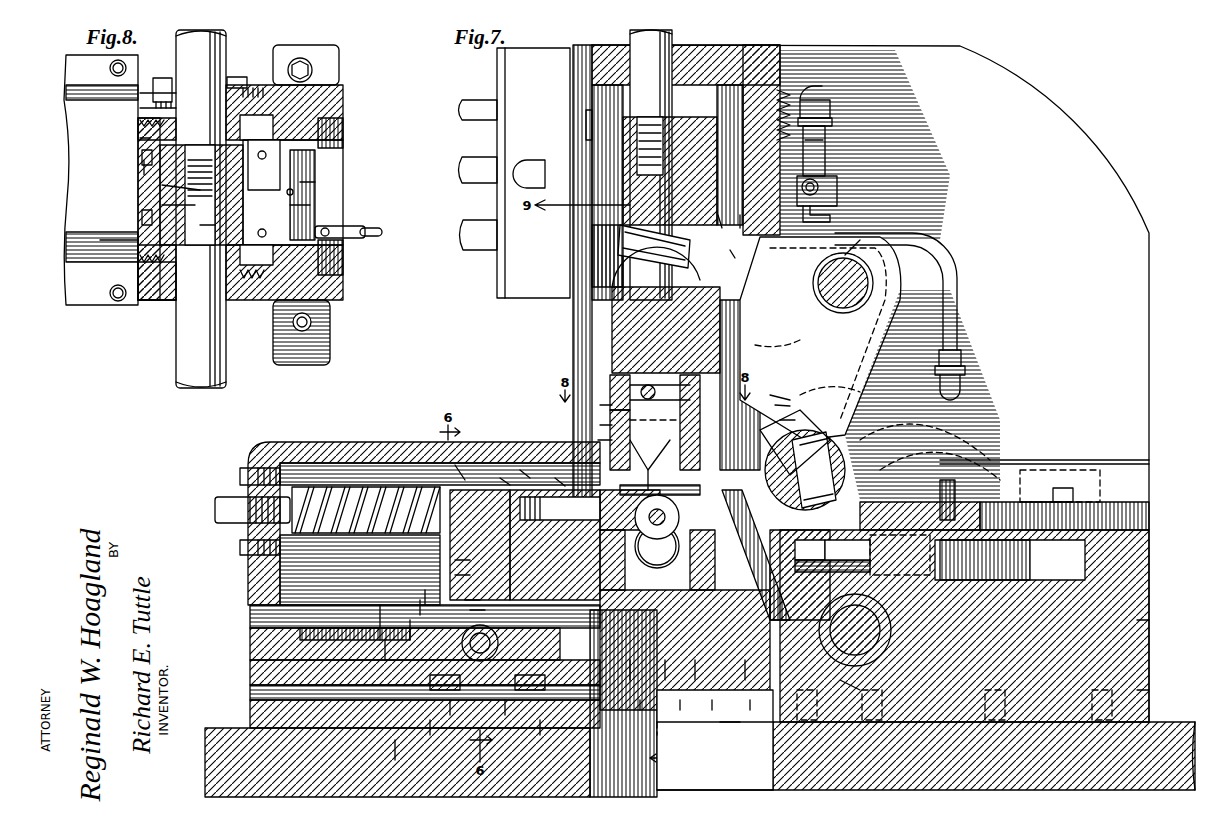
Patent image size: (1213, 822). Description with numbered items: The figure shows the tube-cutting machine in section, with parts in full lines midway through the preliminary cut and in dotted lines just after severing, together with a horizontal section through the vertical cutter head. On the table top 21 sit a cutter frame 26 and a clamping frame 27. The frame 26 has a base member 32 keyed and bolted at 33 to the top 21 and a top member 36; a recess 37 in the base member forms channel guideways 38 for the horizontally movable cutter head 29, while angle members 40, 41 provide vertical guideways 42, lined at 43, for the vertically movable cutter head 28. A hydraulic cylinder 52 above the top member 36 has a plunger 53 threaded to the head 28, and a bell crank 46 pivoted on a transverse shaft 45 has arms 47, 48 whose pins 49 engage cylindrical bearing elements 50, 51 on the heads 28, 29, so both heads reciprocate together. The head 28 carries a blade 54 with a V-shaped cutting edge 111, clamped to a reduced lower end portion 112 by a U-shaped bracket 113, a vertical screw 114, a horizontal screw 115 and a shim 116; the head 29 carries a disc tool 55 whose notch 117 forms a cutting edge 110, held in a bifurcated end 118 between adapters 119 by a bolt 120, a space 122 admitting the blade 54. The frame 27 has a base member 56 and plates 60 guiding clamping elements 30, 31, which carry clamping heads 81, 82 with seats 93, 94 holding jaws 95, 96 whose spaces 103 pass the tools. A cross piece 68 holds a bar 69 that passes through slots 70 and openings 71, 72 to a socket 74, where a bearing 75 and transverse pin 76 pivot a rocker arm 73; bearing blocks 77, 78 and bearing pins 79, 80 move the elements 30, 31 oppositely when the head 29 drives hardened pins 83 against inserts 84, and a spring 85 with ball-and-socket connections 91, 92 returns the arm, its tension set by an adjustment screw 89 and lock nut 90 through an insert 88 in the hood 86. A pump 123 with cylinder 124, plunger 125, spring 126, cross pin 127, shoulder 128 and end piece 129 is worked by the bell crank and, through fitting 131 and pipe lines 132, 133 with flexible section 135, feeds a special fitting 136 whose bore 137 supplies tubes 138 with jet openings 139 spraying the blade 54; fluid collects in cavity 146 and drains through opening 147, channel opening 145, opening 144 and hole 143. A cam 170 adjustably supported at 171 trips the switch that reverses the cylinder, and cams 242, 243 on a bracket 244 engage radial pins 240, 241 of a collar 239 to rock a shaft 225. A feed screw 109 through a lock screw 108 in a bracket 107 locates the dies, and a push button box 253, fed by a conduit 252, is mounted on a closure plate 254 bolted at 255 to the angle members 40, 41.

In FIG. 7, the table top 21 is at (232, 730).
In FIG. 8, the cutter frame 26 is at (338, 300).
In FIG. 7, the cutter frame 26 is at (1154, 560).
In FIG. 8, the clamping frame 27 is at (97, 305).
In FIG. 7, the clamping frame 27 is at (244, 700).
In FIG. 8, the vertically movable tube cutter head 28 is at (240, 134).
In FIG. 7, the vertically movable tube cutter head 28 is at (635, 310).
In FIG. 8, the horizontally movable tube cutter head 29 is at (343, 150).
In FIG. 7, the horizontally movable tube cutter head 29 is at (955, 432).
In FIG. 7, the tube-clamping element 30 is at (380, 605).
In FIG. 7, the tube-clamping element 31 is at (385, 640).
In FIG. 7, the base member 32 is at (1149, 622).
In FIG. 7, the bolting 33 is at (1149, 692).
In FIG. 7, the top member 36 is at (582, 47).
In FIG. 7, the recess 37 is at (1118, 502).
In FIG. 7, the channel guideways 38 is at (1085, 502).
In FIG. 8, the angle member 40 is at (168, 270).
In FIG. 8, the angle member 41 is at (192, 118).
In FIG. 7, the angle member 41 is at (600, 230).
In FIG. 8, the vertical guideways 42 is at (344, 130).
In FIG. 7, the vertical guideways 42 is at (700, 80).
In FIG. 8, the lining 43 is at (262, 90).
In FIG. 7, the transverse shaft 45 is at (890, 225).
In FIG. 7, the bell crank 46 is at (900, 245).
In FIG. 7, the arm of bell crank 47 is at (700, 282).
In FIG. 7, the arm of bell crank 48 is at (830, 381).
In FIG. 7, the pins 49 is at (620, 245).
In FIG. 7, the cylindrical bearing element 50 is at (630, 285).
In FIG. 7, the cylindrical bearing element 51 is at (812, 428).
In FIG. 7, the hydraulic cylinder 52 is at (700, 45).
In FIG. 7, the plunger 53 is at (640, 45).
In FIG. 8, the cutting tool 54 is at (160, 178).
In FIG. 7, the cutting tool 54 is at (610, 410).
In FIG. 7, the cutting tool 55 is at (605, 440).
In FIG. 7, the base member 56 is at (255, 692).
In FIG. 8, the heavy plate 60 is at (145, 302).
In FIG. 7, the heavy plate 60 is at (255, 612).
In FIG. 7, the cross piece 68 is at (255, 670).
In FIG. 7, the bar 69 is at (255, 645).
In FIG. 7, the slots 70 is at (405, 625).
In FIG. 7, the opening 71 is at (395, 760).
In FIG. 7, the opening 72 is at (410, 620).
In FIG. 7, the rocker arm 73 is at (495, 465).
In FIG. 7, the socket 74 is at (470, 610).
In FIG. 7, the bearing 75 is at (465, 600).
In FIG. 7, the transverse pin 76 is at (460, 590).
In FIG. 7, the bearing block 77 is at (430, 735).
In FIG. 7, the bearing block 78 is at (420, 600).
In FIG. 7, the bearing pins 79 is at (450, 715).
In FIG. 7, the bearing pins 80 is at (425, 590).
In FIG. 7, the clamping head 81 is at (745, 680).
In FIG. 7, the clamping head 82 is at (525, 470).
In FIG. 8, the hardened pins 83 is at (142, 152).
In FIG. 7, the hardened pins 83 is at (538, 497).
In FIG. 7, the hardened inserts 84 is at (505, 480).
In FIG. 7, the compression spiral spring 85 is at (364, 487).
In FIG. 8, the hood 86 is at (70, 174).
In FIG. 7, the hood 86 is at (418, 442).
In FIG. 7, the removable insert 88 is at (240, 547).
In FIG. 7, the adjustment screw 89 is at (215, 505).
In FIG. 7, the lock nut 90 is at (240, 478).
In FIG. 7, the ball-and-socket connection 91 is at (460, 470).
In FIG. 7, the ball-and-socket connection 92 is at (292, 442).
In FIG. 7, the right-angled seat 93 is at (718, 712).
In FIG. 7, the right-angled seat 94 is at (630, 680).
In FIG. 7, the jaw 95 is at (695, 680).
In FIG. 7, the jaw 96 is at (665, 680).
In FIG. 7, the spaces 103 is at (685, 712).
In FIG. 8, the bracket 107 is at (150, 108).
In FIG. 8, the lock screw 108 is at (152, 96).
In FIG. 8, the feed screw 109 is at (162, 78).
In FIG. 7, the cutting edge 110 is at (653, 546).
In FIG. 7, the V-shaped cutting edge 111 is at (610, 425).
In FIG. 8, the reduced lower end portion 112 is at (140, 138).
In FIG. 8, the U-shaped bracket 113 is at (162, 190).
In FIG. 7, the U-shaped bracket 113 is at (607, 360).
In FIG. 8, the vertical screw 114 is at (205, 222).
In FIG. 8, the horizontal screw 115 is at (162, 205).
In FIG. 7, the horizontal screw 115 is at (612, 378).
In FIG. 8, the shim 116 is at (147, 162).
In FIG. 7, the notch 117 is at (657, 532).
In FIG. 7, the bifurcated forward end 118 is at (660, 482).
In FIG. 7, the adapter 119 is at (638, 447).
In FIG. 7, the bolt 120 is at (660, 470).
In FIG. 7, the space 122 is at (560, 480).
In FIG. 7, the pump 123 is at (828, 122).
In FIG. 7, the cylinder 124 is at (824, 138).
In FIG. 7, the plunger 125 is at (826, 160).
In FIG. 7, the spring 126 is at (826, 106).
In FIG. 7, the cross pin 127 is at (746, 232).
In FIG. 7, the shoulder 128 is at (715, 232).
In FIG. 7, the hardened end piece 129 is at (743, 258).
In FIG. 7, the pipe fitting 131 is at (792, 100).
In FIG. 7, the pipe line 132 is at (958, 266).
In FIG. 7, the pipe line 133 is at (824, 150).
In FIG. 8, the flexible pipe section 135 is at (365, 236).
In FIG. 8, the special fitting 136 is at (300, 192).
In FIG. 7, the special fitting 136 is at (785, 406).
In FIG. 7, the bore 137 is at (778, 396).
In FIG. 8, the tubes 138 is at (249, 232).
In FIG. 7, the tubes 138 is at (655, 400).
In FIG. 7, the jetlike openings 139 is at (655, 418).
In FIG. 7, the hole 143 is at (712, 781).
In FIG. 7, the opening 144 is at (660, 728).
In FIG. 7, the channel-like opening 145 is at (757, 712).
In FIG. 8, the cavity 146 is at (300, 205).
In FIG. 7, the cavity 146 is at (690, 440).
In FIG. 8, the opening 147 is at (315, 182).
In FIG. 7, the opening 147 is at (820, 545).
In FIG. 7, the cam 170 is at (1062, 470).
In FIG. 7, the adjustable support 171 is at (982, 470).
In FIG. 7, the shaft 225 is at (850, 640).
In FIG. 7, the collar 239 is at (856, 679).
In FIG. 7, the radial pin 240 is at (832, 556).
In FIG. 7, the radial pin 241 is at (850, 550).
In FIG. 7, the cam element 242 is at (945, 560).
In FIG. 7, the cam element 243 is at (765, 555).
In FIG. 7, the bracket 244 is at (900, 553).
In FIG. 7, the conduit 252 is at (545, 165).
In FIG. 7, the push button box 253 is at (508, 88).
In FIG. 8, the closure plate 254 is at (120, 240).
In FIG. 7, the closure plate 254 is at (590, 118).
In FIG. 8, the bolting 255 is at (142, 124).